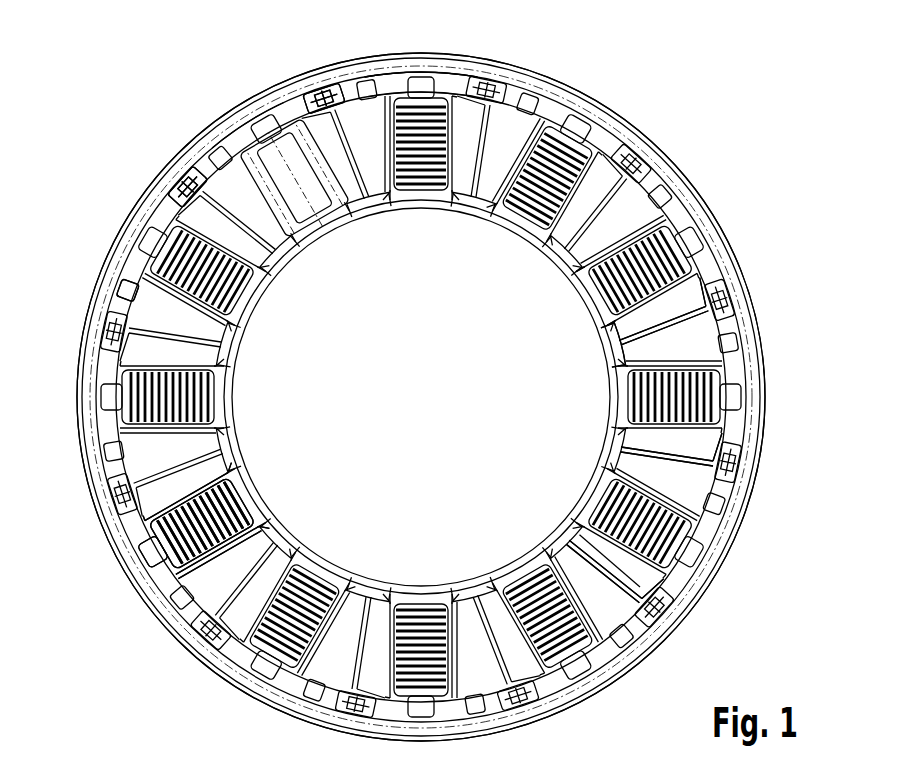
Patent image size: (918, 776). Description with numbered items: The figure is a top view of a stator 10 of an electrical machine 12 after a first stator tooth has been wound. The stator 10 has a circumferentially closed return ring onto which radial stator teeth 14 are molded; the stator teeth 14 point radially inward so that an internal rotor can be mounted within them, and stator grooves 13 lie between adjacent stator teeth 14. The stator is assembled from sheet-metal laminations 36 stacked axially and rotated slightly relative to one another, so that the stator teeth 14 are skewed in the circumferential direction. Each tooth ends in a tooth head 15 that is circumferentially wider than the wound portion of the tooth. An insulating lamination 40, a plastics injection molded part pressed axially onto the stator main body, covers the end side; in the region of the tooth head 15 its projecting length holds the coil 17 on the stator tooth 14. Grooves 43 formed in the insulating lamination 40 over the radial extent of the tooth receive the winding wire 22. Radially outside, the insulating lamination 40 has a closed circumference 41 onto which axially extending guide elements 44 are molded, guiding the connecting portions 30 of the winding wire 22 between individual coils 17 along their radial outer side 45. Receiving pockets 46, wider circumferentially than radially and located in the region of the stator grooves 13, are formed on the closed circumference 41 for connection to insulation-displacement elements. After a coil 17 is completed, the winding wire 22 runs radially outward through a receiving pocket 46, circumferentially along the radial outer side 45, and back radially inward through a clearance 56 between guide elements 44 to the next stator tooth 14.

The stator 10 is at (427, 388).
The electrical machine 12 is at (693, 110).
The stator grooves 13 is at (705, 356).
The stator teeth 14 is at (693, 466).
The tooth head 15 is at (596, 288).
The coil 17 is at (300, 182).
The winding wire 22 is at (421, 45).
The connecting portions 30 is at (372, 72).
The sheet-metal laminations 36 is at (612, 588).
The insulating lamination 40 is at (150, 402).
The closed circumference 41 is at (138, 580).
The grooves 43 is at (213, 495).
The guide elements 44 is at (357, 76).
The radial outer side 45 is at (118, 270).
The receiving pockets 46 is at (318, 103).
The clearance 56 is at (432, 78).